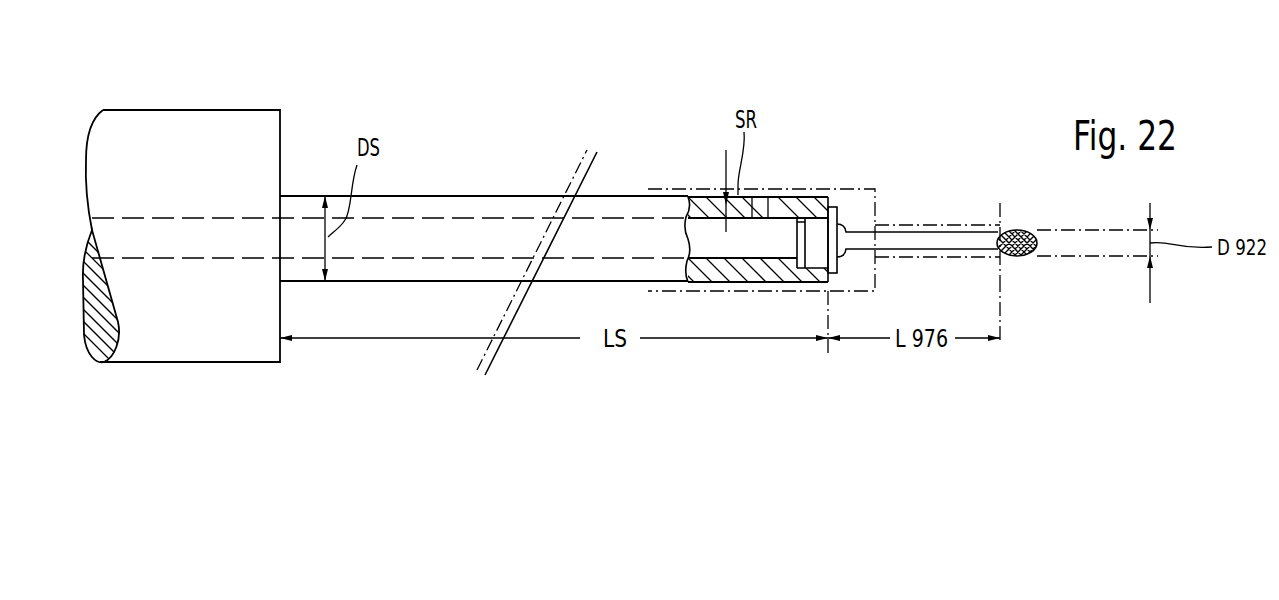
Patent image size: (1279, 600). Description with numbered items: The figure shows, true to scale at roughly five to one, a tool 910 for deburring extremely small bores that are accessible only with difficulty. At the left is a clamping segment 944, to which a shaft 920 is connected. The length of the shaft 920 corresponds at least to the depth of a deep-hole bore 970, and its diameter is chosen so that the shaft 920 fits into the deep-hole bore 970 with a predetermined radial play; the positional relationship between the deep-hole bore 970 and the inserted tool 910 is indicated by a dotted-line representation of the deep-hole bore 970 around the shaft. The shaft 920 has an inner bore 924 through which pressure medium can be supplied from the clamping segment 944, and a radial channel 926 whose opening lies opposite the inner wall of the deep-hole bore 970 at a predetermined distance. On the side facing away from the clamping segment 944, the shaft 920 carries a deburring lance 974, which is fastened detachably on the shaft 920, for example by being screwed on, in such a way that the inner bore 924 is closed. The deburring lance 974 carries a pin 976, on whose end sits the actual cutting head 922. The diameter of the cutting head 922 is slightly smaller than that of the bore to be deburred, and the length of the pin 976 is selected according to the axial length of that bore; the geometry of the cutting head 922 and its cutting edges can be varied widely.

The clamping segment 944 is at (170, 130).
The shaft 920 is at (425, 205).
The tool 910 is at (522, 183).
The inner bore 924 is at (705, 228).
The radial channel 926 is at (767, 205).
The deep-hole bore 970 is at (846, 196).
The pin 976 is at (920, 240).
The deburring lance 974 is at (965, 222).
The cutting head 922 is at (1035, 250).